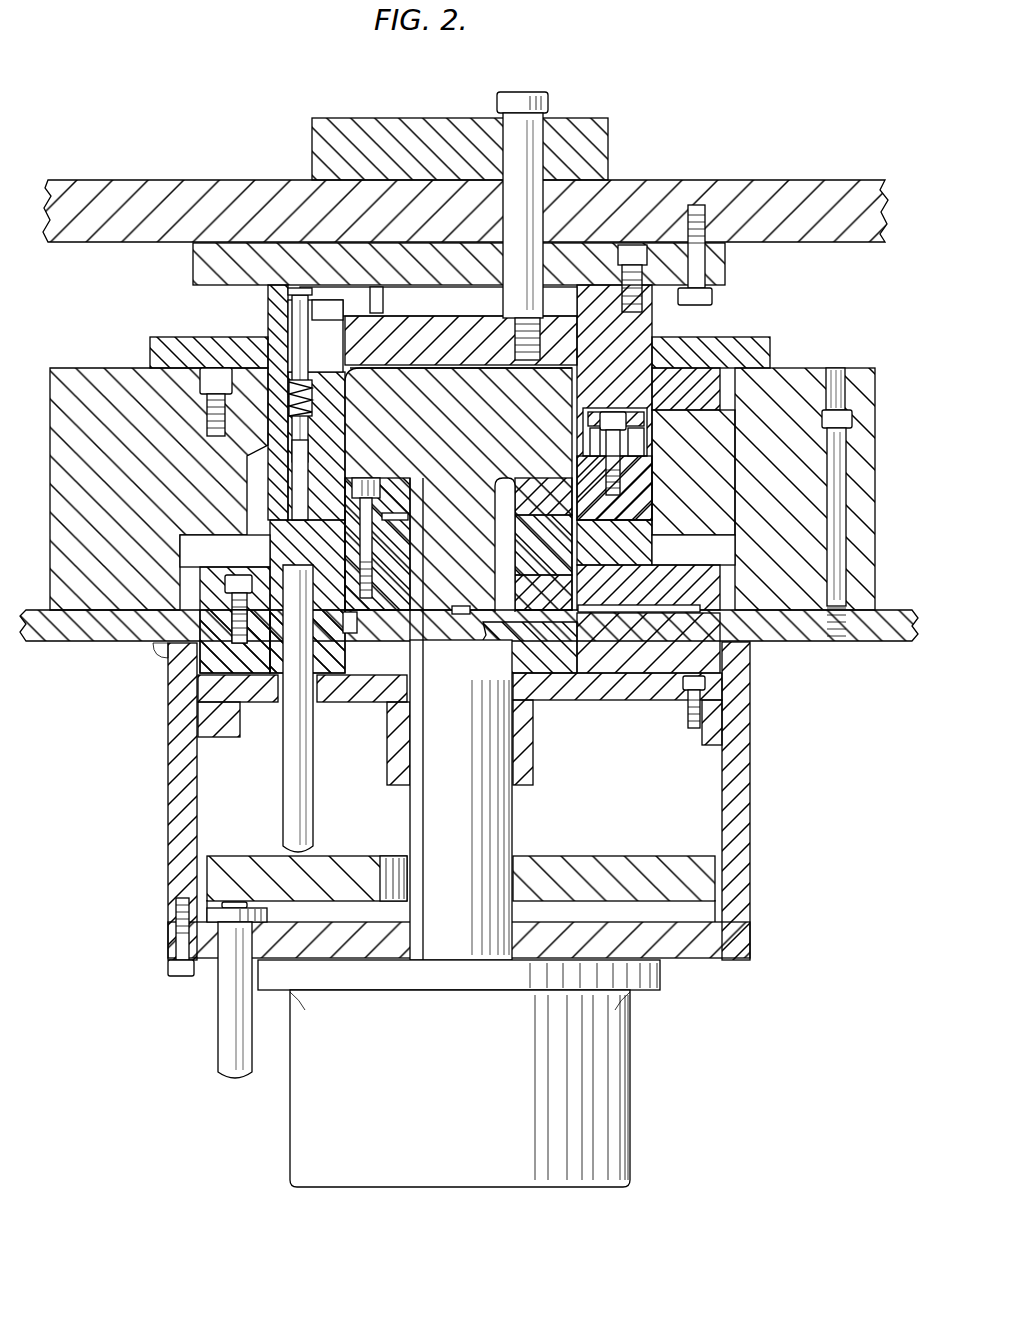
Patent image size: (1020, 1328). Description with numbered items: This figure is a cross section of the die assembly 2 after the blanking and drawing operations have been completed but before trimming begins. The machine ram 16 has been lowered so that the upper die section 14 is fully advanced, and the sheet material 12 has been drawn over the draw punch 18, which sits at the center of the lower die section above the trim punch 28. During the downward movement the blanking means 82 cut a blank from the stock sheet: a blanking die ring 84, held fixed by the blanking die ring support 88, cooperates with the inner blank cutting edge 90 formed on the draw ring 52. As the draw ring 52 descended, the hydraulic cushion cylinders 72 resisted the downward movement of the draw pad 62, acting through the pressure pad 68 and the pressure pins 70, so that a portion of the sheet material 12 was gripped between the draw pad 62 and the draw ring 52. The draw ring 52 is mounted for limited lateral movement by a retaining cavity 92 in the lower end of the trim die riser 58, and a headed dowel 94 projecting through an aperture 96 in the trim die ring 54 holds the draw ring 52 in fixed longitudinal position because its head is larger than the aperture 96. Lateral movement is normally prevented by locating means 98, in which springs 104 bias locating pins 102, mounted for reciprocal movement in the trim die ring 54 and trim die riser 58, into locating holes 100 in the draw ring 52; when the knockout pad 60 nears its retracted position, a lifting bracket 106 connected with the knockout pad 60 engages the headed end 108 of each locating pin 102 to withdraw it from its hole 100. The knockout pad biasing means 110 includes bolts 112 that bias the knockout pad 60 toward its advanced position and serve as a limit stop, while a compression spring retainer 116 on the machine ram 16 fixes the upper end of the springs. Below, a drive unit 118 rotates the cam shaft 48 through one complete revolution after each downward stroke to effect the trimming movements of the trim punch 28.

The die assembly 2 is at (805, 323).
The sheet material 12 is at (446, 370).
The upper die section 14 is at (656, 328).
The machine ram 16 is at (662, 186).
The draw punch 18 is at (474, 450).
The trim punch 28 is at (502, 496).
The rotatable shaft 48 is at (500, 824).
The draw ring 52 is at (648, 496).
The trim die ring 54 is at (648, 470).
The trim die riser 58 is at (628, 348).
The knockout pad 60 is at (484, 322).
The draw pad 62 is at (270, 545).
The pressure pad 68 is at (358, 858).
The pressure pins 70 is at (313, 776).
The hydraulic cushion cylinders 72 is at (222, 1017).
The blanking means 82 is at (261, 397).
The blanking die ring 84 is at (704, 392).
The blanking die ring support 88 is at (870, 500).
The inner blank cutting edge 90 is at (650, 518).
The retaining cavity 92 is at (644, 426).
The headed dowel 94 is at (588, 412).
The aperture 96 is at (586, 452).
The locating means 98 is at (310, 315).
The locating holes 100 is at (292, 490).
The locating pins 102 is at (280, 312).
The springs 104 is at (314, 400).
The lifting bracket 106 is at (384, 304).
The headed end 108 is at (300, 292).
The knockout pad biasing means 110 is at (565, 215).
The bolts 112 is at (533, 215).
The compression spring retainer 116 is at (318, 146).
The drive unit 118 is at (481, 1061).